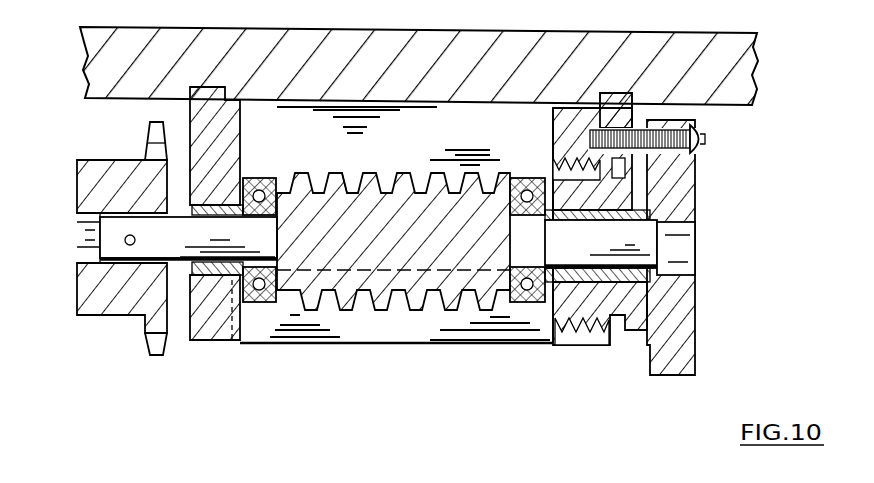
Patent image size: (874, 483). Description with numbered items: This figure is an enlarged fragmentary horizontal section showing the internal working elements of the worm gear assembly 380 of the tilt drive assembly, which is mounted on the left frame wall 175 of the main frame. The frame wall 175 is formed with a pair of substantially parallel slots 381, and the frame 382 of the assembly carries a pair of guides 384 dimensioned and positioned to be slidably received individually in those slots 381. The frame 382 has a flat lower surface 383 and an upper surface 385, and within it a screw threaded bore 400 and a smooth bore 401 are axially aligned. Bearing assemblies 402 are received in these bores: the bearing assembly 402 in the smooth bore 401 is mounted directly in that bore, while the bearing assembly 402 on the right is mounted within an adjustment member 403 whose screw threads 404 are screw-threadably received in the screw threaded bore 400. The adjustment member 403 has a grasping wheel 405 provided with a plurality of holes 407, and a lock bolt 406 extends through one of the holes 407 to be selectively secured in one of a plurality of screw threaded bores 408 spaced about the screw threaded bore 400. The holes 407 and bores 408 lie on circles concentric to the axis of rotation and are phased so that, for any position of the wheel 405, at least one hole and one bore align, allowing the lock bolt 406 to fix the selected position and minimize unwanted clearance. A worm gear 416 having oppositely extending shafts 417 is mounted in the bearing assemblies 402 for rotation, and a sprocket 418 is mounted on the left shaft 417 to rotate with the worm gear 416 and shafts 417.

The left frame wall 175 is at (413, 57).
The worm gear assembly 380 is at (363, 347).
The slots 381 is at (188, 100).
The frame 382 is at (214, 341).
The lower surface 383 is at (572, 100).
The guides 384 is at (207, 85).
The upper surface 385 is at (500, 345).
The screw threaded bore 400 is at (622, 233).
The smooth bore 401 is at (213, 221).
The bearing assemblies 402 is at (270, 178).
The adjustment member 403 is at (695, 285).
The screw threads 404 is at (592, 345).
The grasping wheel 405 is at (695, 318).
The lock bolt 406 is at (705, 142).
The holes 407 is at (690, 166).
The screw threaded bores 408 is at (553, 112).
The worm gear 416 is at (376, 175).
The shafts 417 is at (178, 262).
The sprocket 418 is at (96, 315).